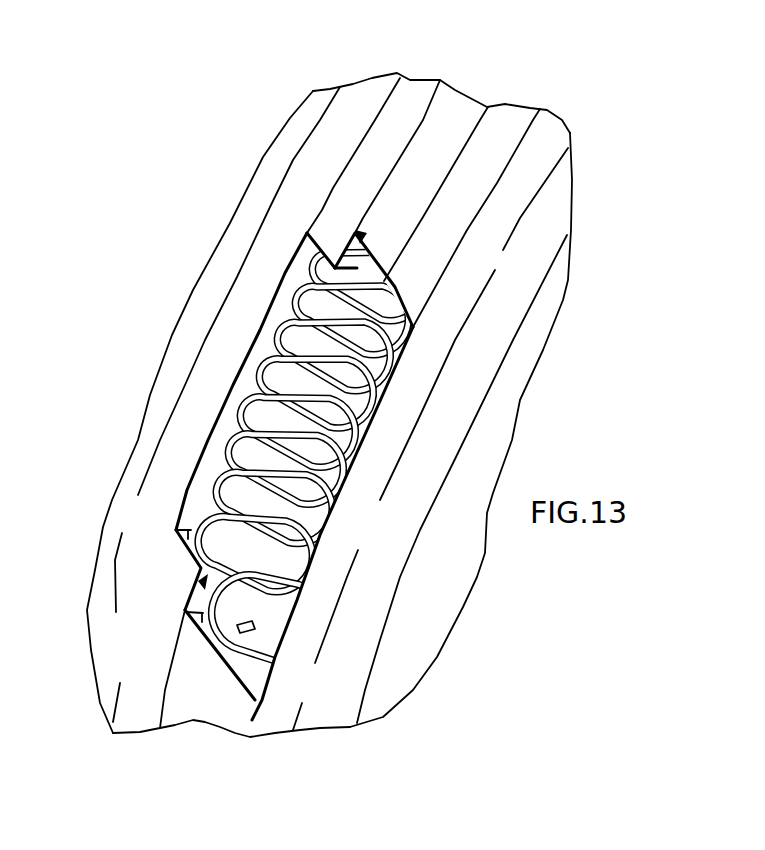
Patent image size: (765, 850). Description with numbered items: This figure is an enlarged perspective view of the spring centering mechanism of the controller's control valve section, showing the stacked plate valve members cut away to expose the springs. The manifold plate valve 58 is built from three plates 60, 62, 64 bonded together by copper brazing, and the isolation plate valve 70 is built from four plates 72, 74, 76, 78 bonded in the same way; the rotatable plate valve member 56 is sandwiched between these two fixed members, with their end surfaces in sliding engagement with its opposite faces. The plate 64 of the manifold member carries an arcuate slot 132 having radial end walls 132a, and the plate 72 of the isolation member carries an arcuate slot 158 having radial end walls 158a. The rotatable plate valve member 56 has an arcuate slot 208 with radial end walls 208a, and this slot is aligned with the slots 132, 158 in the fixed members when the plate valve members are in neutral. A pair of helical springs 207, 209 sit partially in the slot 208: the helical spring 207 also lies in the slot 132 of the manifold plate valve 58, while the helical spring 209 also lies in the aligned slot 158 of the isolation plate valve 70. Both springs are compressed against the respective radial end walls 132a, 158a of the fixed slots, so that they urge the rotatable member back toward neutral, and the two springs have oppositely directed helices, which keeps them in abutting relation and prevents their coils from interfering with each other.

The manifold plate valve 58 is at (333, 68).
The isolation plate valve 70 is at (568, 101).
The plate 60 is at (279, 179).
The plate 62 is at (324, 179).
The plate 64 is at (372, 179).
The rotatable plate valve member 56 is at (441, 174).
The plate 72 is at (487, 175).
The plate 74 is at (511, 224).
The plate 76 is at (445, 477).
The plate 78 is at (479, 504).
The arcuate slot 132 is at (235, 370).
The radial end wall 132a is at (300, 243).
The arcuate slot 158 is at (266, 680).
The radial end wall 158a is at (393, 278).
The helical spring 207 is at (230, 455).
The arcuate slot 208 is at (204, 582).
The radial end wall 208a is at (358, 236).
The helical spring 209 is at (332, 512).